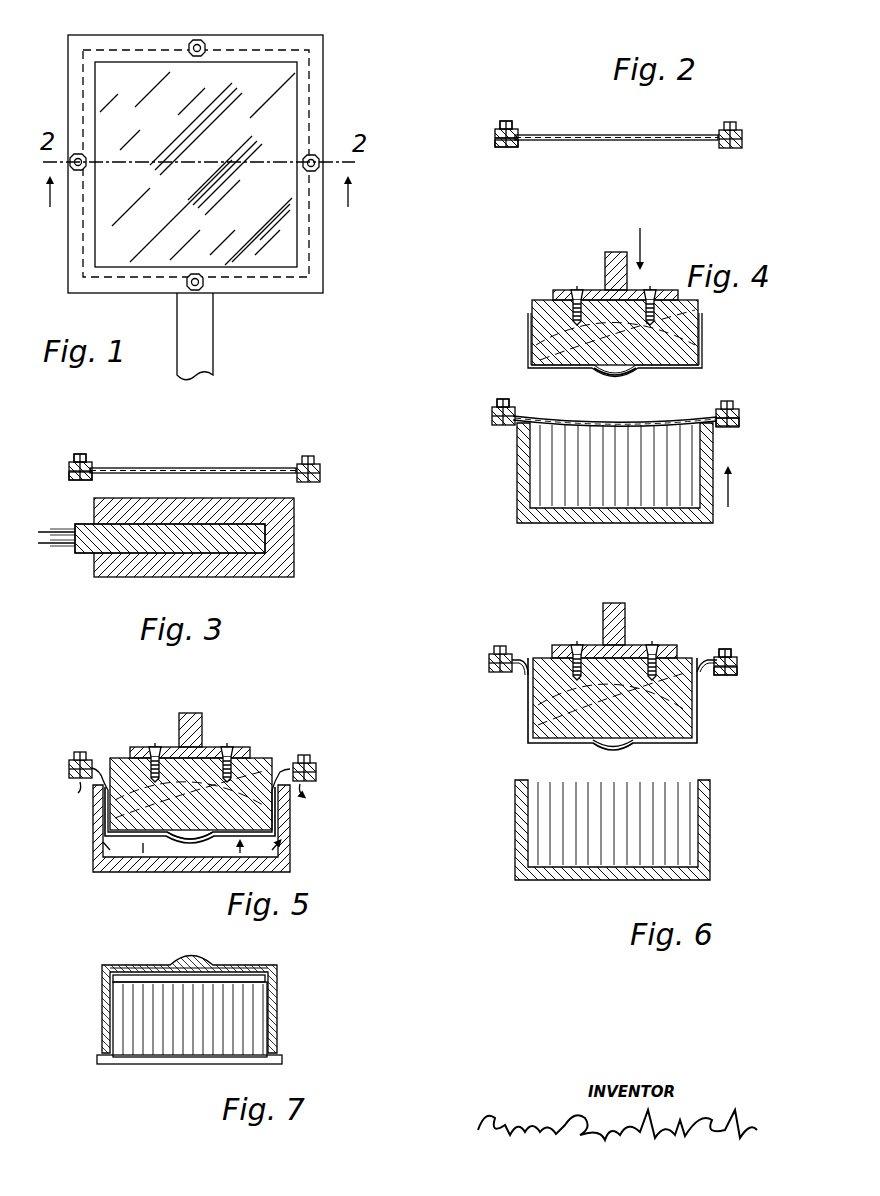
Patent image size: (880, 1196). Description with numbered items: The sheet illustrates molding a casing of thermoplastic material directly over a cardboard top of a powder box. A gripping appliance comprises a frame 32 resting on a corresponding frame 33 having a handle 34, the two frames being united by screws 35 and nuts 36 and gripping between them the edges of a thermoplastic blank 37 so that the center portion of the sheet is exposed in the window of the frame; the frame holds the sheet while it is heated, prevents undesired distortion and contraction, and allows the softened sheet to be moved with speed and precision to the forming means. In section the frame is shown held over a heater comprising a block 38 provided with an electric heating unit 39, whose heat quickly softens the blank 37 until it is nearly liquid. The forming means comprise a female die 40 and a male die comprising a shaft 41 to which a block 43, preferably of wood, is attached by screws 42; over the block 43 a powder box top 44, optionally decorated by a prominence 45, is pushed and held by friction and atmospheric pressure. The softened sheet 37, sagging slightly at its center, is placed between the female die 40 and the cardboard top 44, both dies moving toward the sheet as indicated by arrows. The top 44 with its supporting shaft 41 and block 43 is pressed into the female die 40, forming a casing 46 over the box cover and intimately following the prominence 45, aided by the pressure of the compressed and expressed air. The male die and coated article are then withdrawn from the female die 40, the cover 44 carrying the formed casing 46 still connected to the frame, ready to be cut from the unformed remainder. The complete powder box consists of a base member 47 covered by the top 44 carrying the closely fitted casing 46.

In FIG. 1, the frame 32 is at (302, 247).
In FIG. 2, the frame 32 is at (518, 135).
In FIG. 3, the frame 32 is at (73, 460).
In FIG. 4, the frame 32 is at (740, 412).
In FIG. 5, the frame 32 is at (192, 766).
In FIG. 6, the frame 32 is at (737, 670).
In FIG. 2, the corresponding frame 33 is at (512, 140).
In FIG. 3, the corresponding frame 33 is at (77, 473).
In FIG. 4, the corresponding frame 33 is at (735, 428).
In FIG. 6, the corresponding frame 33 is at (735, 677).
In FIG. 1, the handle 34 is at (203, 352).
In FIG. 2, the screws 35 is at (493, 147).
In FIG. 1, the nuts 36 is at (203, 40).
In FIG. 2, the nuts 36 is at (498, 123).
In FIG. 3, the nuts 36 is at (83, 463).
In FIG. 4, the nuts 36 is at (500, 400).
In FIG. 6, the nuts 36 is at (731, 653).
In FIG. 1, the thermoplastic blank 37 is at (275, 128).
In FIG. 2, the thermoplastic blank 37 is at (633, 141).
In FIG. 3, the thermoplastic blank 37 is at (180, 468).
In FIG. 4, the thermoplastic blank 37 is at (548, 423).
In FIG. 3, the block 38 is at (270, 563).
In FIG. 3, the electric heating unit 39 is at (97, 543).
In FIG. 4, the female die 40 is at (520, 500).
In FIG. 5, the female die 40 is at (110, 870).
In FIG. 6, the female die 40 is at (540, 857).
In FIG. 4, the shaft 41 is at (605, 268).
In FIG. 5, the shaft 41 is at (200, 737).
In FIG. 6, the shaft 41 is at (625, 620).
In FIG. 4, the screws 42 is at (572, 290).
In FIG. 5, the screws 42 is at (152, 748).
In FIG. 6, the screws 42 is at (655, 645).
In FIG. 4, the block 43 is at (545, 318).
In FIG. 5, the block 43 is at (267, 762).
In FIG. 6, the block 43 is at (545, 660).
In FIG. 4, the powder box top 44 is at (703, 360).
In FIG. 5, the powder box top 44 is at (107, 780).
In FIG. 6, the powder box top 44 is at (515, 660).
In FIG. 7, the powder box top 44 is at (117, 980).
In FIG. 4, the prominence 45 is at (615, 380).
In FIG. 5, the prominence 45 is at (187, 840).
In FIG. 6, the prominence 45 is at (605, 748).
In FIG. 5, the casing 46 is at (267, 822).
In FIG. 6, the casing 46 is at (528, 710).
In FIG. 7, the casing 46 is at (275, 1003).
In FIG. 7, the base member 47 is at (160, 1062).